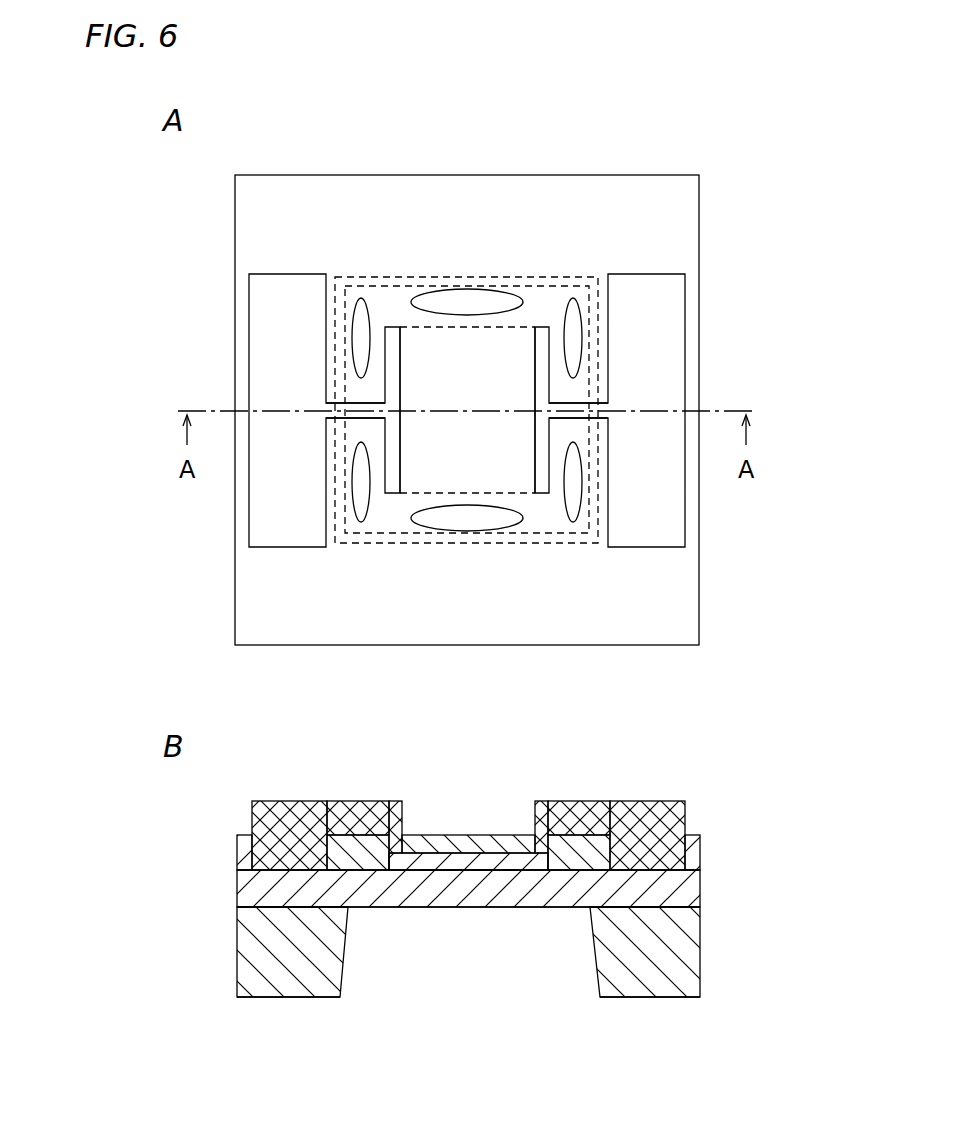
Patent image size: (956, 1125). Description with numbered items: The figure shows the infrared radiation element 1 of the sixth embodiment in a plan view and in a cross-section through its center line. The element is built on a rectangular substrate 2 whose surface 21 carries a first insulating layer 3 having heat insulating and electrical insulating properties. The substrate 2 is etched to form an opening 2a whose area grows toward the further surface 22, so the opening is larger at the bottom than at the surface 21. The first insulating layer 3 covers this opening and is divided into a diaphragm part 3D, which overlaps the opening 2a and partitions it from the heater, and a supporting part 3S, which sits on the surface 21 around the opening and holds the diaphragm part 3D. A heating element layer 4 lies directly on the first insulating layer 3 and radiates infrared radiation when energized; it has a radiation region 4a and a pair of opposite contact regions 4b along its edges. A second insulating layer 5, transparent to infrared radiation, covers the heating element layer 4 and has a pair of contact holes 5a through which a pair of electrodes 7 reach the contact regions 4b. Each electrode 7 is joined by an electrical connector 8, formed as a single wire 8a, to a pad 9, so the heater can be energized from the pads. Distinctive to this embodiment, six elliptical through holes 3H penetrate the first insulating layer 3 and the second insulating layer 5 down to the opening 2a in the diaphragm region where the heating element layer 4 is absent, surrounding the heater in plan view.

The infrared radiation element 1 is at (700, 200).
The substrate 2 is at (433, 190).
The opening 2a is at (408, 290).
The first insulating layer 3 is at (450, 903).
The supporting part 3S is at (693, 878).
The diaphragm part 3D is at (488, 893).
The through holes 3H is at (467, 300).
The heating element layer 4 is at (500, 326).
The radiation region 4a is at (470, 862).
The contact regions 4b is at (393, 858).
The second insulating layer 5 is at (488, 192).
The contact holes 5a is at (393, 838).
The electrodes 7 is at (540, 365).
The electrical connectors 8 is at (358, 403).
The wire 8a is at (568, 818).
The pads 9 is at (652, 300).
The surface 21 is at (277, 906).
The further surface 22 is at (288, 1000).